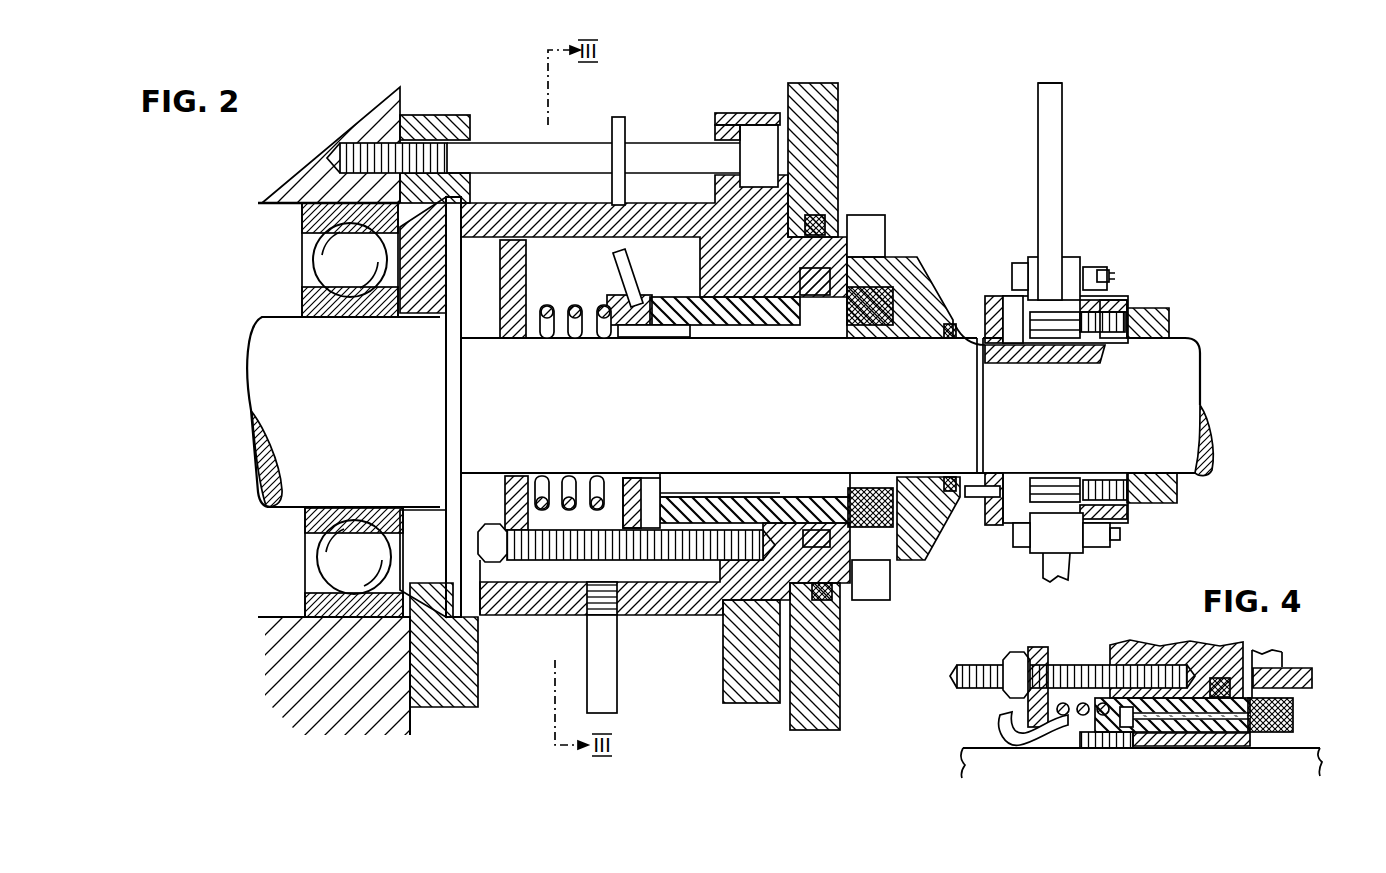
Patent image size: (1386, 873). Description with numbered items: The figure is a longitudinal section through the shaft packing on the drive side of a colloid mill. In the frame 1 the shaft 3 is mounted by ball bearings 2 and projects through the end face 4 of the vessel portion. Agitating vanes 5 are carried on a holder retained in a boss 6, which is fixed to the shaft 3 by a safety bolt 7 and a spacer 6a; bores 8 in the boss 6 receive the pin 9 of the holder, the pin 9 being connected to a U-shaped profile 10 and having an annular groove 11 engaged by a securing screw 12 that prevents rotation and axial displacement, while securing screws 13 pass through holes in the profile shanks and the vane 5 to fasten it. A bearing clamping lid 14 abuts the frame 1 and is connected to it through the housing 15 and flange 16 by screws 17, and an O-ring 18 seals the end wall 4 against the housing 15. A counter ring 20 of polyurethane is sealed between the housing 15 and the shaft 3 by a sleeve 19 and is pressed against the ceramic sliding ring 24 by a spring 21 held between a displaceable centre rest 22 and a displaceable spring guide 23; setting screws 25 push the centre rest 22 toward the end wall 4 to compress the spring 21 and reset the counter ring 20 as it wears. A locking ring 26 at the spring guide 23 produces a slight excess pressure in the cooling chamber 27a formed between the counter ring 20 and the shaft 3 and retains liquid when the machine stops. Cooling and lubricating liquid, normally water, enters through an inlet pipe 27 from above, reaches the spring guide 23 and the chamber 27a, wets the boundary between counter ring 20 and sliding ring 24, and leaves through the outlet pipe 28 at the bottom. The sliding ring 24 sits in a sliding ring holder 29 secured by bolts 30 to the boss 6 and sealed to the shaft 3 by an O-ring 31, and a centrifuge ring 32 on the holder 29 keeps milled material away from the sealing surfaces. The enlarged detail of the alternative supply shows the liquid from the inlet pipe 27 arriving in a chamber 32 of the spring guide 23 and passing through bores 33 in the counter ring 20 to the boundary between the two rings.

In FIG. 2, the frame 1 is at (292, 652).
In FIG. 2, the ball bearings 2 is at (328, 262).
In FIG. 2, the shaft 3 is at (338, 418).
In FIG. 4, the shaft 3 is at (962, 750).
In FIG. 2, the end face 4 is at (820, 108).
In FIG. 2, the agitating vanes 5 is at (1062, 110).
In FIG. 2, the boss 6 is at (992, 300).
In FIG. 2, the spacer 6a is at (1150, 315).
In FIG. 2, the safety bolt 7 is at (1015, 352).
In FIG. 2, the bores 8 is at (1047, 300).
In FIG. 2, the pin 9 is at (1040, 300).
In FIG. 2, the U-shaped profile 10 is at (1085, 262).
In FIG. 2, the annular groove 11 is at (1068, 340).
In FIG. 2, the securing screw 12 is at (1112, 330).
In FIG. 2, the securing screws 13 is at (1110, 276).
In FIG. 2, the bearing clamping lid 14 is at (450, 665).
In FIG. 2, the housing 15 is at (700, 597).
In FIG. 4, the housing 15 is at (1178, 652).
In FIG. 2, the flange 16 is at (737, 128).
In FIG. 2, the screws 17 is at (655, 150).
In FIG. 2, the O-ring 18 is at (818, 218).
In FIG. 2, the sleeve 19 is at (806, 298).
In FIG. 2, the counter ring 20 is at (744, 327).
In FIG. 4, the counter ring 20 is at (1228, 740).
In FIG. 2, the spring 21 is at (572, 335).
In FIG. 4, the spring 21 is at (1064, 702).
In FIG. 2, the centre rest 22 is at (527, 278).
In FIG. 4, the centre rest 22 is at (1037, 648).
In FIG. 2, the spring guide 23 is at (645, 480).
In FIG. 4, the spring guide 23 is at (1118, 742).
In FIG. 2, the sliding ring 24 is at (864, 330).
In FIG. 4, the sliding ring 24 is at (1276, 740).
In FIG. 2, the setting screws 25 is at (641, 560).
In FIG. 4, the setting screws 25 is at (976, 664).
In FIG. 2, the locking ring 26 is at (612, 330).
In FIG. 2, the inlet pipe 27 is at (612, 128).
In FIG. 4, the inlet pipe 27 is at (1020, 740).
In FIG. 2, the cooling chamber 27a is at (693, 337).
In FIG. 2, the outlet pipe 28 is at (603, 690).
In FIG. 2, the sliding ring holder 29 is at (900, 265).
In FIG. 2, the bolts 30 is at (978, 500).
In FIG. 2, the O-ring 31 is at (950, 478).
In FIG. 2, the centrifuge ring 32 is at (870, 232).
In FIG. 4, the centrifuge ring 32 is at (1132, 742).
In FIG. 4, the bores 33 is at (1195, 742).